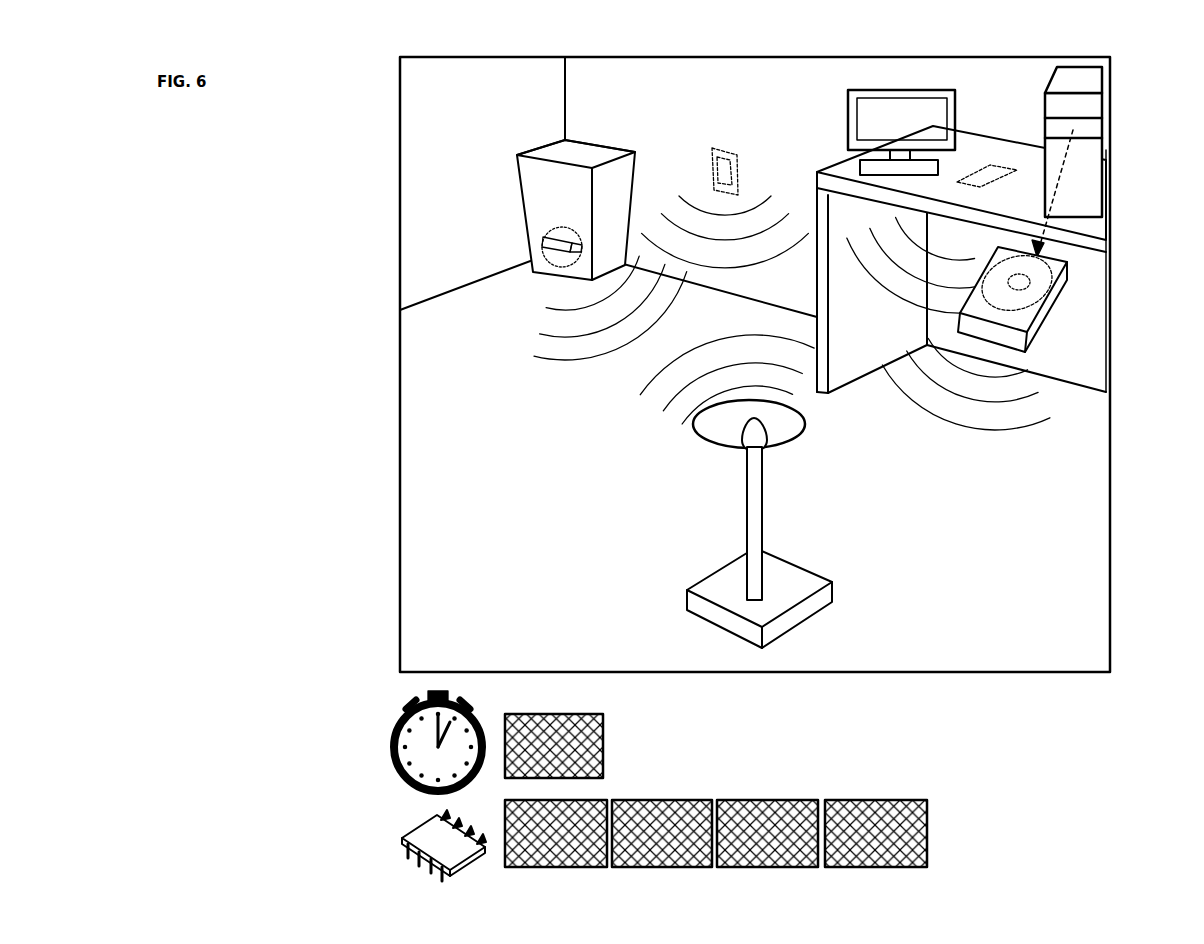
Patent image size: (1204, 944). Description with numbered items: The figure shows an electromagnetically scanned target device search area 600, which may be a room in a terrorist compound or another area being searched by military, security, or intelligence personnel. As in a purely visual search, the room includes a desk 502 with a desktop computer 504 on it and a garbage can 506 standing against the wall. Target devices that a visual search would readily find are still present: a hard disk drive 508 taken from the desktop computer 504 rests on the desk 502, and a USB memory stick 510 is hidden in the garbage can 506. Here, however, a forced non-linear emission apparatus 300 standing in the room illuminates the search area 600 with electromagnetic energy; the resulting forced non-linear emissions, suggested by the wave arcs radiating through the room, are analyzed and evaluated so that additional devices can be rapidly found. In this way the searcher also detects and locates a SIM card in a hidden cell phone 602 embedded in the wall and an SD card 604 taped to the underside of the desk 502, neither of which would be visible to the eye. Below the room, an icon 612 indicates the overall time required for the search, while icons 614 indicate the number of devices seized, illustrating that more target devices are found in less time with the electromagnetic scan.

The forced non-linear emission apparatus 300 is at (780, 568).
The desk 502 is at (820, 240).
The desktop computer 504 is at (1058, 78).
The garbage can 506 is at (523, 163).
The hard disk drive 508 is at (1037, 313).
The USB memory stick 510 is at (565, 248).
The electromagnetically scanned target device search area 600 is at (1133, 131).
The hidden cell phone 602 is at (717, 173).
The SD card 604 is at (968, 183).
The icon indicating overall search time 612 is at (508, 712).
The icons indicating number of devices seized 614 is at (507, 813).